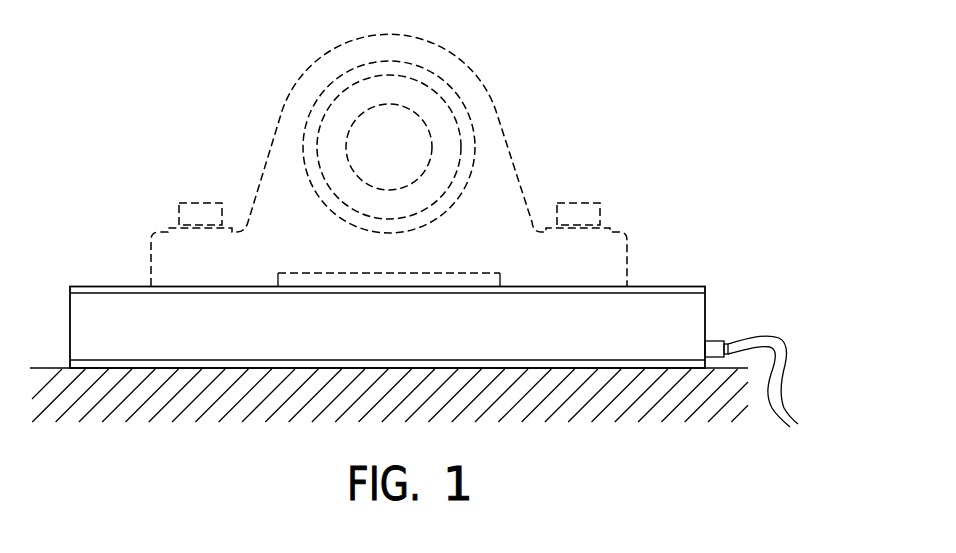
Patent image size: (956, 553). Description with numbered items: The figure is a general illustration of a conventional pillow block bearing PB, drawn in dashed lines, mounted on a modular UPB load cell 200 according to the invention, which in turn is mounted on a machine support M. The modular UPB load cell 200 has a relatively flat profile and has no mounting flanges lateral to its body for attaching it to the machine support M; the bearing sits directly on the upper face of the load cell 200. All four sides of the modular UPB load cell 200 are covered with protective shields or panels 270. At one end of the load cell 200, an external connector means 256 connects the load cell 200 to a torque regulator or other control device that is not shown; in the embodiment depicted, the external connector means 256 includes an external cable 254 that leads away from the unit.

The pillow block bearing PB is at (493, 155).
The modular UPB load cell 200 is at (645, 322).
The protective shields or panels 270 is at (407, 342).
The external connector means 256 is at (713, 340).
The external cable 254 is at (785, 340).
The machine support M is at (128, 402).